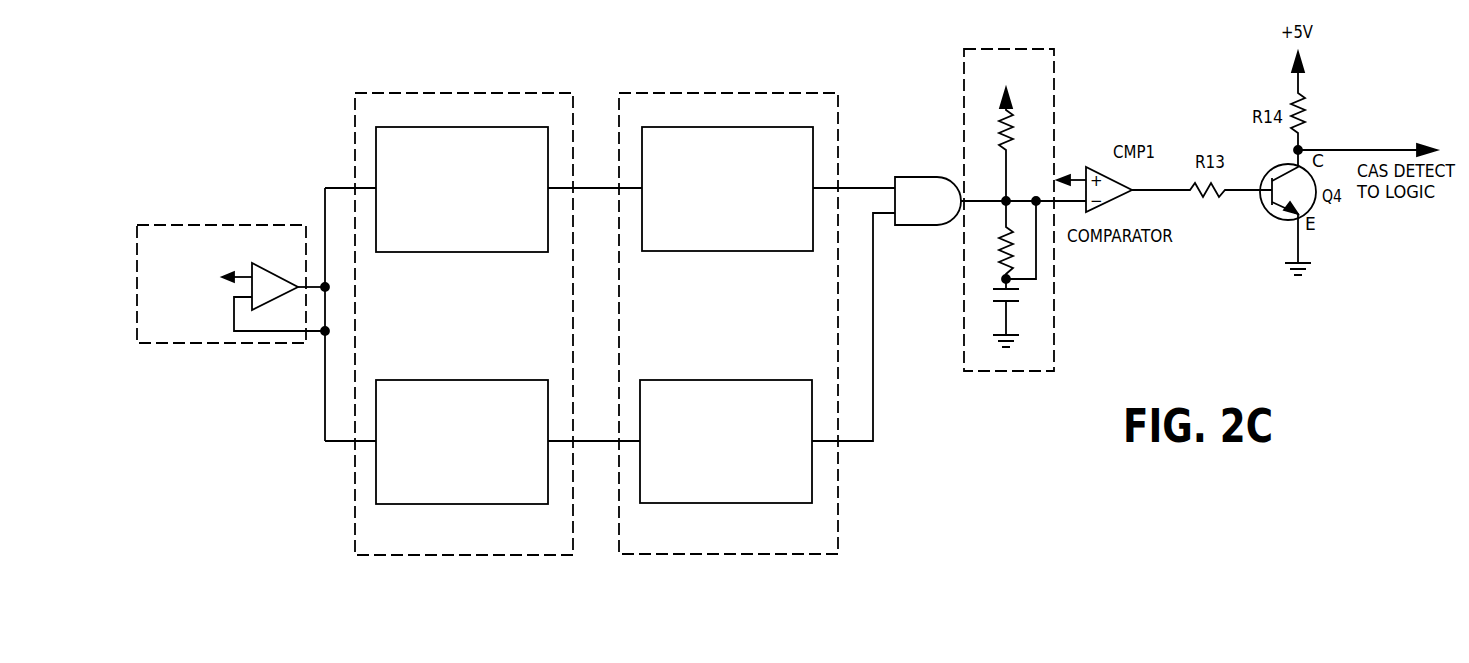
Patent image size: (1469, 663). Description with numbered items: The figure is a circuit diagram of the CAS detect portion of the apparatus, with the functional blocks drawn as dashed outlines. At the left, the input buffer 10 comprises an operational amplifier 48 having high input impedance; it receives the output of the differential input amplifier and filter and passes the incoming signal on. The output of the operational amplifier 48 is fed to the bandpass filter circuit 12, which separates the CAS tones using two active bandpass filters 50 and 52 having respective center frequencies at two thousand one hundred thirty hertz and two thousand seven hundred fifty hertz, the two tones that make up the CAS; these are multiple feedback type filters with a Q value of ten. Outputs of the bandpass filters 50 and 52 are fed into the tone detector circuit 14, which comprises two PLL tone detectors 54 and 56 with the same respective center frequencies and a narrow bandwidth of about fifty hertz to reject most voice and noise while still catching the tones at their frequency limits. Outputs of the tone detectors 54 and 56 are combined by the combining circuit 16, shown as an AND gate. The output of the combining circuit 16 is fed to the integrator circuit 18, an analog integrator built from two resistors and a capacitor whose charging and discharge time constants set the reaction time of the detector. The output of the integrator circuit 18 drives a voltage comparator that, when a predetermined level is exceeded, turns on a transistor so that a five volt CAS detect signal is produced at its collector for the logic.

The input buffer 10 is at (205, 224).
The operational amplifier 48 is at (284, 270).
The bandpass filter circuit 12 is at (430, 93).
The active bandpass filter 50 is at (465, 127).
The active bandpass filter 52 is at (465, 380).
The tone detector circuit 14 is at (686, 93).
The PLL tone detector 54 is at (728, 127).
The PLL tone detector 56 is at (743, 380).
The combining circuit 16 is at (930, 225).
The integrator circuit 18 is at (995, 49).